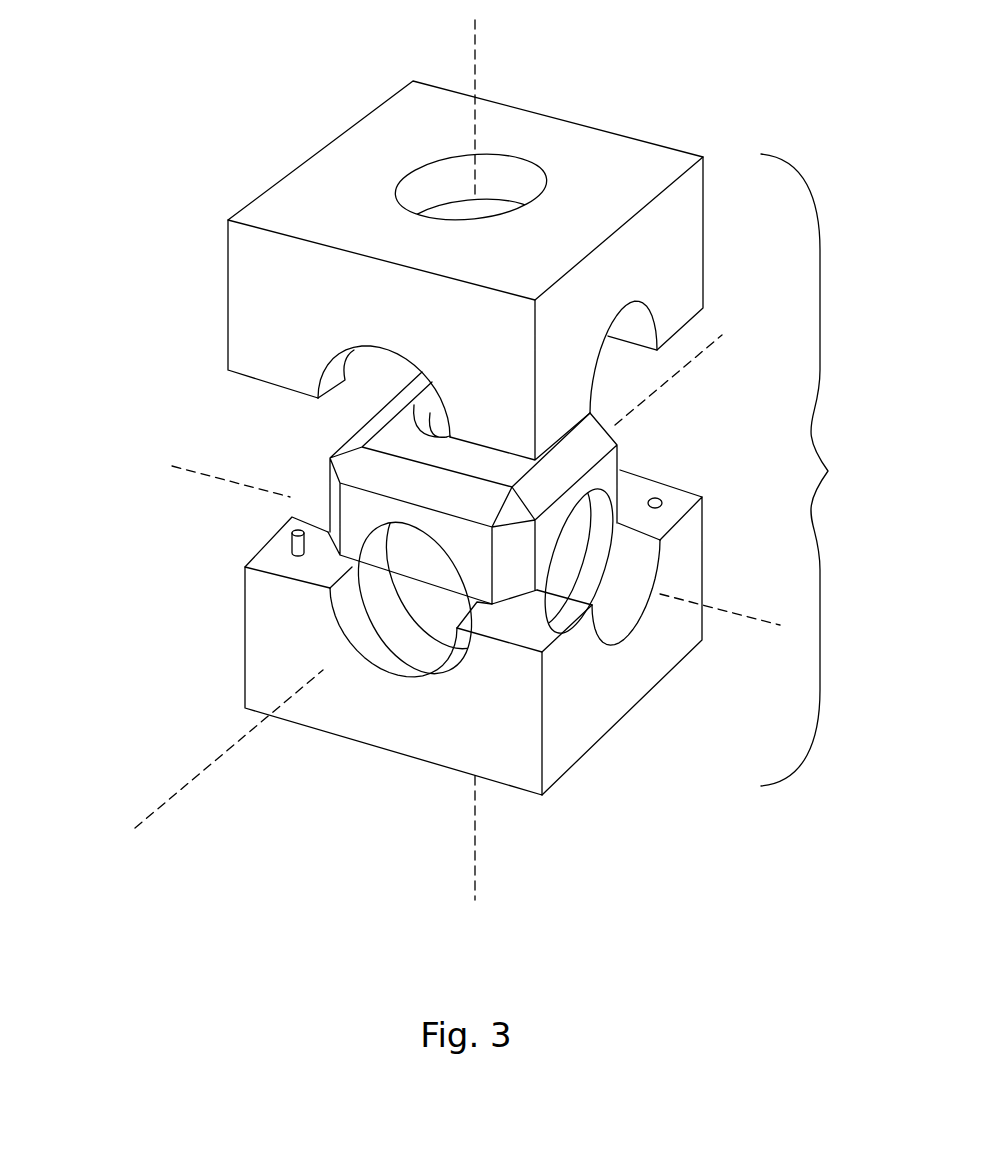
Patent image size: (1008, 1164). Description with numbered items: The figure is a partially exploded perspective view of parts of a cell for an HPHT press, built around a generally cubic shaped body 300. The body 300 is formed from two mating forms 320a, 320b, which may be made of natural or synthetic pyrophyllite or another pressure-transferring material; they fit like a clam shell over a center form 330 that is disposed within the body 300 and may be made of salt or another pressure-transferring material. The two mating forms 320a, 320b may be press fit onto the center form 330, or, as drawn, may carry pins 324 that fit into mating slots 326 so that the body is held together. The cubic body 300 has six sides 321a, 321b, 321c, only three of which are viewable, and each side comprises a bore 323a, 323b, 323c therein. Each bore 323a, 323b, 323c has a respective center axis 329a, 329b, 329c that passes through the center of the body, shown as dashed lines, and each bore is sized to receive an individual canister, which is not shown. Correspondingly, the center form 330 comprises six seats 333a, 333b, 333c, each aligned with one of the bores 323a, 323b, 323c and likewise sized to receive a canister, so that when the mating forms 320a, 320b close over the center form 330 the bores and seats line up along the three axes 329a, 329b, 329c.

The generally cubic shaped body 300 is at (823, 470).
The mating form 320a is at (268, 323).
The mating form 320b is at (298, 645).
The side 321a is at (315, 697).
The side 321b is at (615, 675).
The side 321c is at (325, 188).
The bore 323a is at (422, 583).
The bore 323b is at (615, 605).
The bore 323c is at (487, 177).
The pin 324 is at (293, 536).
The mating slot 326 is at (656, 502).
The center axis 329a is at (205, 750).
The center axis 329b is at (724, 617).
The center axis 329c is at (468, 68).
The center form 330 is at (512, 567).
The seat 333a is at (388, 653).
The seat 333b is at (563, 558).
The seat 333c is at (442, 445).